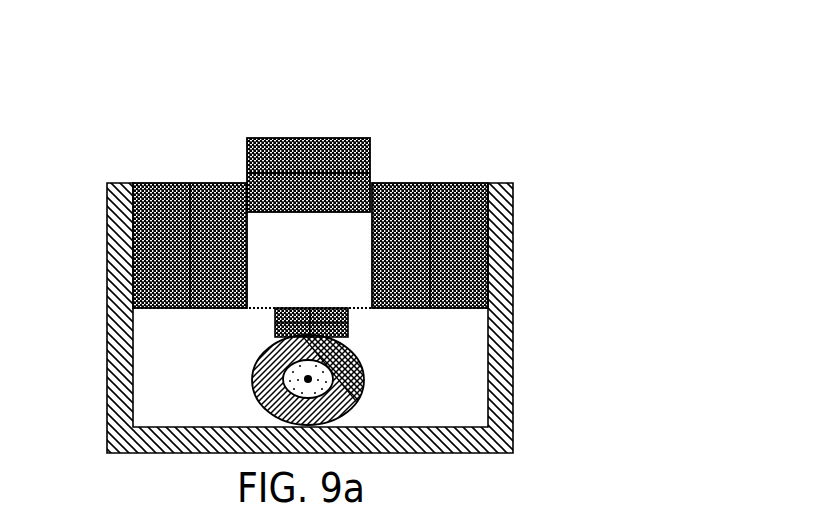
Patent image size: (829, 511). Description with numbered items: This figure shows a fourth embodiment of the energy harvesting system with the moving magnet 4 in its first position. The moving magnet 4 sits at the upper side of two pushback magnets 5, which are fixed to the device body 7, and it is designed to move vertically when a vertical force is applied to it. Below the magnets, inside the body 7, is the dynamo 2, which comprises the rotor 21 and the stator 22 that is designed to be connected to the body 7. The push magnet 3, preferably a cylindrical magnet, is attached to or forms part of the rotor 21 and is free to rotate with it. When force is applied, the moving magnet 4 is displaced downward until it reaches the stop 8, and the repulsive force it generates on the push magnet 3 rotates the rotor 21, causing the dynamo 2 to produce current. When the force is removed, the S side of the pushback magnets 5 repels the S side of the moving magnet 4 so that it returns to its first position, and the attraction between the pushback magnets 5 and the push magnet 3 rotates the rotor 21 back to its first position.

The dynamo 2 is at (248, 385).
The push magnet 3 is at (354, 323).
The moving magnet 4 is at (276, 142).
The push back magnet 5 is at (188, 166).
The device body 7 is at (101, 267).
The stop 8 is at (257, 304).
The rotor 21 is at (350, 407).
The stator 22 is at (332, 380).